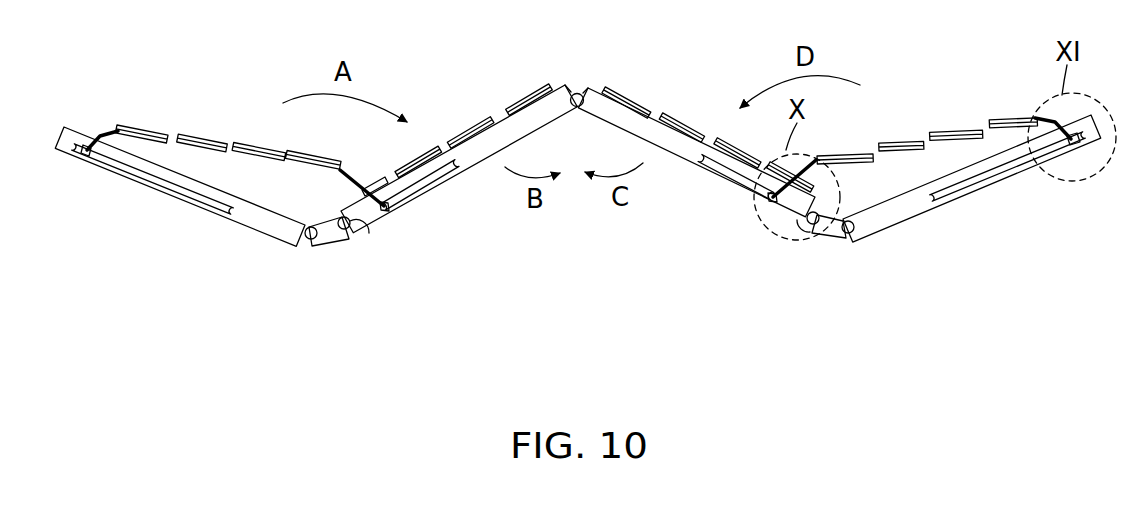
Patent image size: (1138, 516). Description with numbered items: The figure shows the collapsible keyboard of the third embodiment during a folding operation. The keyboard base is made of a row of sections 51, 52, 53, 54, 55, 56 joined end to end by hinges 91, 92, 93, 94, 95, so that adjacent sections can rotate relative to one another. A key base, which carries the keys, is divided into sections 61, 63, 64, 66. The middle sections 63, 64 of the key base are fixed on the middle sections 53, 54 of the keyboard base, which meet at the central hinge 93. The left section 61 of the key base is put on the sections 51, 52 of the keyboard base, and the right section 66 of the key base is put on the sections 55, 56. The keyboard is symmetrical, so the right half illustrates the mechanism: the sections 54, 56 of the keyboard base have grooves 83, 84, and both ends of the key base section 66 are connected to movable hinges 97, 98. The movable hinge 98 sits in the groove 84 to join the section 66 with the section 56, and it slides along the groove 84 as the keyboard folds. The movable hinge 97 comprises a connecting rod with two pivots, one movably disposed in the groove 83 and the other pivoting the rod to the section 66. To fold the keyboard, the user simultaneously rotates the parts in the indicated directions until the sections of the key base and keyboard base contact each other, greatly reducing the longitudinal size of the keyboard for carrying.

The keyboard base section 51 is at (265, 230).
The keyboard base section 52 is at (330, 247).
The keyboard base section 53 is at (477, 160).
The keyboard base section 54 is at (675, 155).
The keyboard base section 55 is at (833, 240).
The keyboard base section 56 is at (895, 220).
The key base section 61 is at (174, 132).
The key base section 63 is at (496, 110).
The key base section 64 is at (628, 88).
The key base section 66 is at (983, 122).
The groove 83 is at (709, 185).
The groove 84 is at (950, 200).
The hinge 91 is at (310, 240).
The hinge 92 is at (349, 229).
The hinge 93 is at (577, 93).
The hinge 94 is at (810, 224).
The hinge 95 is at (850, 236).
The movable hinge 97 is at (768, 208).
The movable hinge 98 is at (1074, 146).